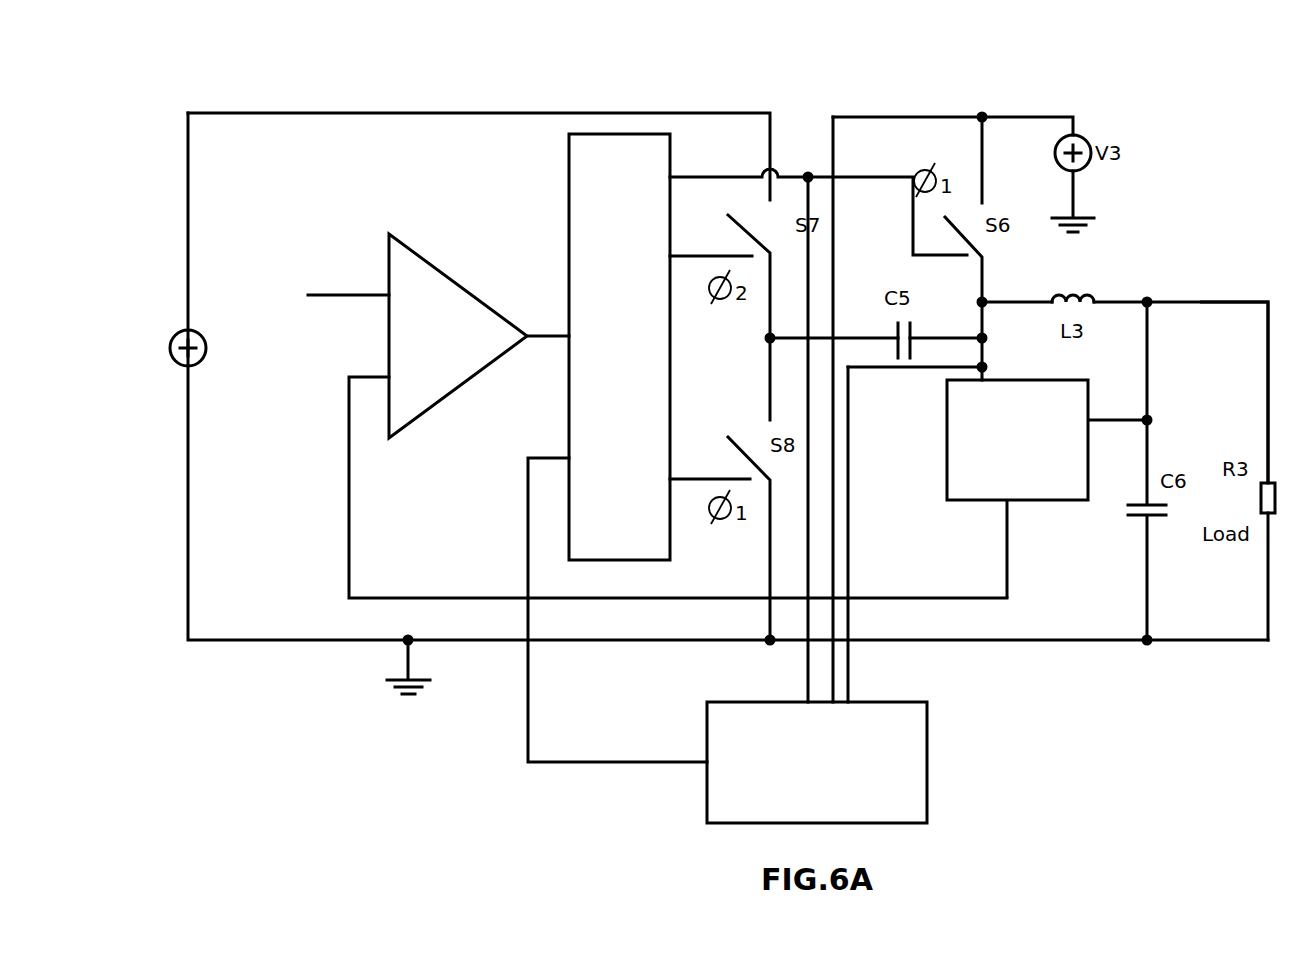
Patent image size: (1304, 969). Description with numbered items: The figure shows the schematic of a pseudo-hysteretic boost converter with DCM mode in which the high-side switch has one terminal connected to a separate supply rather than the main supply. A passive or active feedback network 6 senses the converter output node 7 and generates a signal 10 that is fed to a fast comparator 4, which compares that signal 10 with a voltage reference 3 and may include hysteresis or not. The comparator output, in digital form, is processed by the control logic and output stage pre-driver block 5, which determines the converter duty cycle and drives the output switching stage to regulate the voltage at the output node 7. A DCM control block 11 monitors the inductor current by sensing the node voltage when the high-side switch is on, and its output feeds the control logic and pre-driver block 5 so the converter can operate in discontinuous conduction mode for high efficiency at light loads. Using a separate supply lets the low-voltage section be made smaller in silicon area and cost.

The voltage reference 3 is at (361, 290).
The fast comparator 4 is at (402, 230).
The control logic and output stage pre-driver block 5 is at (587, 134).
The feedback network 6 is at (963, 500).
The output node 7 is at (1210, 302).
The signal 10 is at (345, 510).
The DCM control block 11 is at (927, 752).